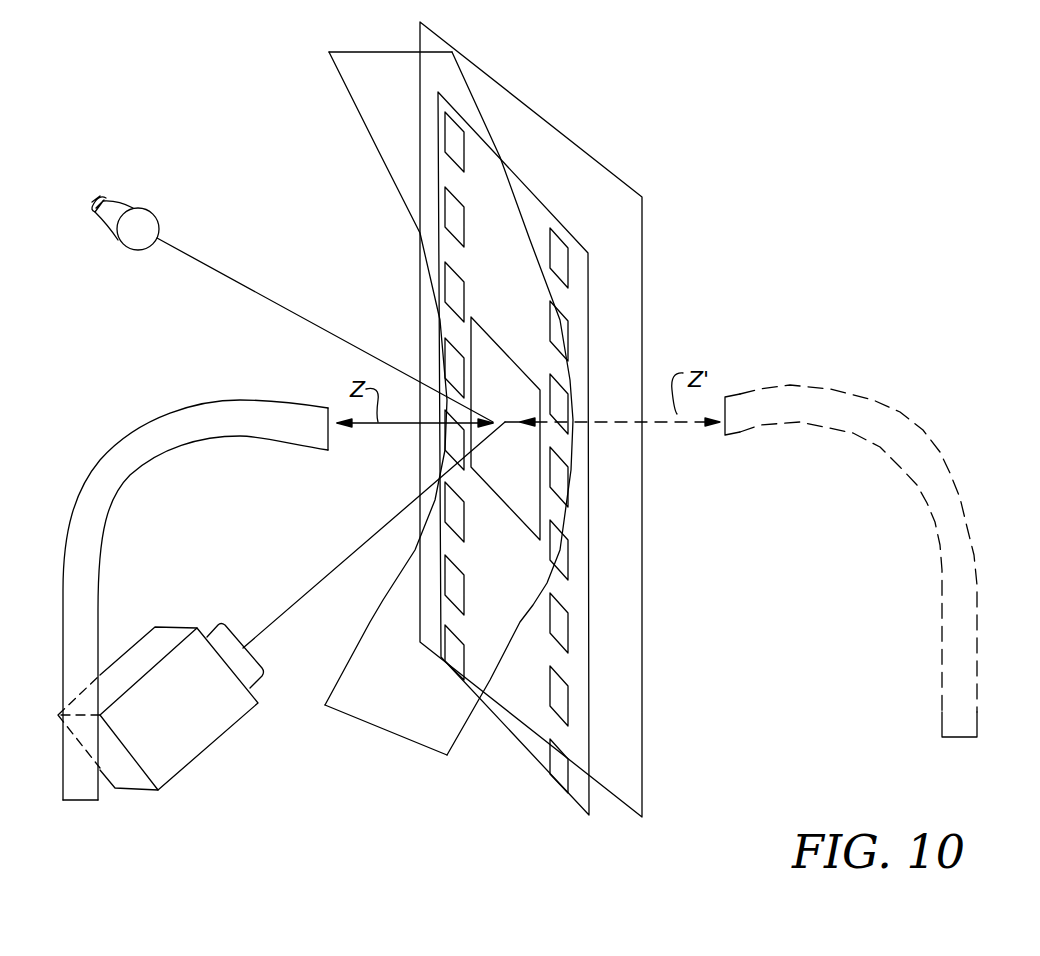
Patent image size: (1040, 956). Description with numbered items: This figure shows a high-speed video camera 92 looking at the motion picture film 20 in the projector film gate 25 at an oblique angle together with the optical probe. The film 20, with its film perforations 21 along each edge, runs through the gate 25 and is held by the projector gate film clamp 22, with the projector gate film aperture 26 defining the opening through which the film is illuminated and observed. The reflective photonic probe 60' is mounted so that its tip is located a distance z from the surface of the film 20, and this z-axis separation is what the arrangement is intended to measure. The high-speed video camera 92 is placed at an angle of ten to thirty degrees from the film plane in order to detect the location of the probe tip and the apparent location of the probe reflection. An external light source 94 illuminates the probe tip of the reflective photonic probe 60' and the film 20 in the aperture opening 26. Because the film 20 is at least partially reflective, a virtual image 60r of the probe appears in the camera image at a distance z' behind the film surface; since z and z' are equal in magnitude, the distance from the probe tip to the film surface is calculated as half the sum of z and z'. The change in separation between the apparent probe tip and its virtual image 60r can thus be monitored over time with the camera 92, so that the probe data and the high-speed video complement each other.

The motion picture film 20 is at (580, 790).
The film perforations 21 is at (560, 780).
The projector gate film clamp 22 is at (385, 733).
The projector film gate 25 is at (643, 737).
The projector gate film aperture 26 is at (523, 502).
The high-speed video camera 92 is at (193, 718).
The external light source 94 is at (131, 204).
The reflective photonic probe 60' is at (195, 588).
The virtual image 60r is at (893, 407).